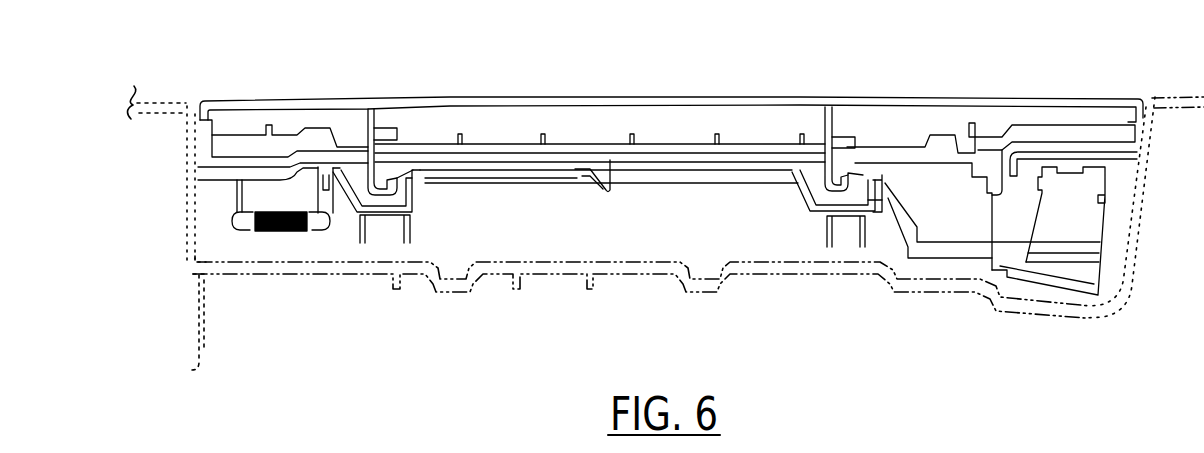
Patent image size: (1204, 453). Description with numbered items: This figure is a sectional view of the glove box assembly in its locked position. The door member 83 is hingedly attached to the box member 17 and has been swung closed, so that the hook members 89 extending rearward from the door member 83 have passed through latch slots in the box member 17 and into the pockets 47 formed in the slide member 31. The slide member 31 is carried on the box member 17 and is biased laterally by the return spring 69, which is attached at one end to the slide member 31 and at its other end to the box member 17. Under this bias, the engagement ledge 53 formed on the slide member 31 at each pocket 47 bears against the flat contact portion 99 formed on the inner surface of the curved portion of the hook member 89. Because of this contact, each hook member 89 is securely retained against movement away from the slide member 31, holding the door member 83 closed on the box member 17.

The box member 17 is at (215, 173).
The slide member 31 is at (668, 187).
The pocket 47 is at (868, 200).
The engagement ledge 53 is at (875, 178).
The return spring 69 is at (268, 233).
The door member 83 is at (1085, 100).
The hook member 89 is at (386, 184).
The flat contact portion 99 is at (865, 180).